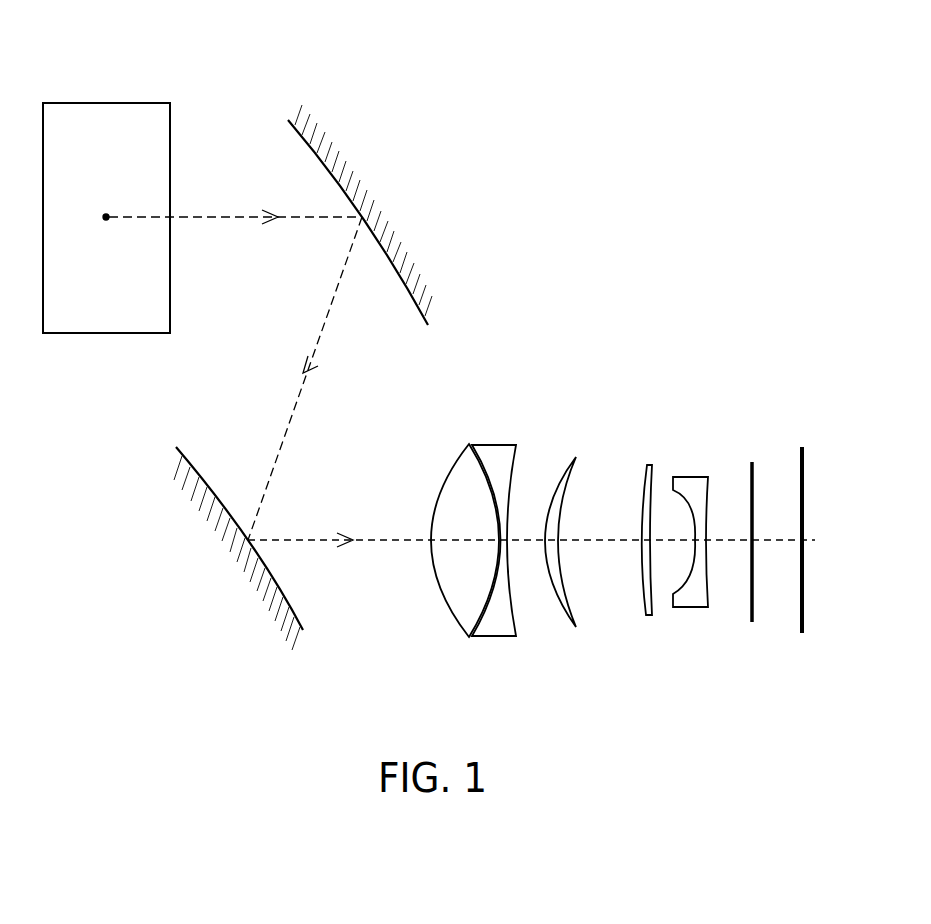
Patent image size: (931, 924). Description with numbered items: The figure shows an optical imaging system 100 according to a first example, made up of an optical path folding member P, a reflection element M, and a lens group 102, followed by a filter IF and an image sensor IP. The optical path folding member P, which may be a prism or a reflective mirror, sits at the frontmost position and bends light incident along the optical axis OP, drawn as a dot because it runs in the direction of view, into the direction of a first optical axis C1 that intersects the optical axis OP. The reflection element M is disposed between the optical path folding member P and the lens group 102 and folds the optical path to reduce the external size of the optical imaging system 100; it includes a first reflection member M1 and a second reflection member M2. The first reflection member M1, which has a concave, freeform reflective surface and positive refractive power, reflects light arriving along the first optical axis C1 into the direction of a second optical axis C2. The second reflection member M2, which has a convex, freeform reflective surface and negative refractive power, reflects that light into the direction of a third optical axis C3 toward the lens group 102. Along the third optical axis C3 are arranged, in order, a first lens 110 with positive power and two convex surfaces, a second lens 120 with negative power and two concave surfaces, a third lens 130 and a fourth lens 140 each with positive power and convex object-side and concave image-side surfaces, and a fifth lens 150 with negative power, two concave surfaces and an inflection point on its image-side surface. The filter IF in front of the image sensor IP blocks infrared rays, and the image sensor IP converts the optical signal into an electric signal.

The optical path folding member P is at (146, 103).
The optical axis OP is at (104, 221).
The first optical axis C1 is at (205, 217).
The second optical axis C2 is at (328, 312).
The third optical axis C3 is at (308, 540).
The reflection element M is at (528, 53).
The first reflection member M1 is at (300, 134).
The second reflection member M2 is at (190, 460).
The optical imaging system 100 is at (572, 356).
The lens group 102 is at (717, 694).
The first lens 110 is at (455, 622).
The second lens 120 is at (488, 640).
The third lens 130 is at (572, 615).
The fourth lens 140 is at (650, 612).
The fifth lens 150 is at (692, 610).
The filter IF is at (753, 628).
The image sensor IP is at (806, 636).